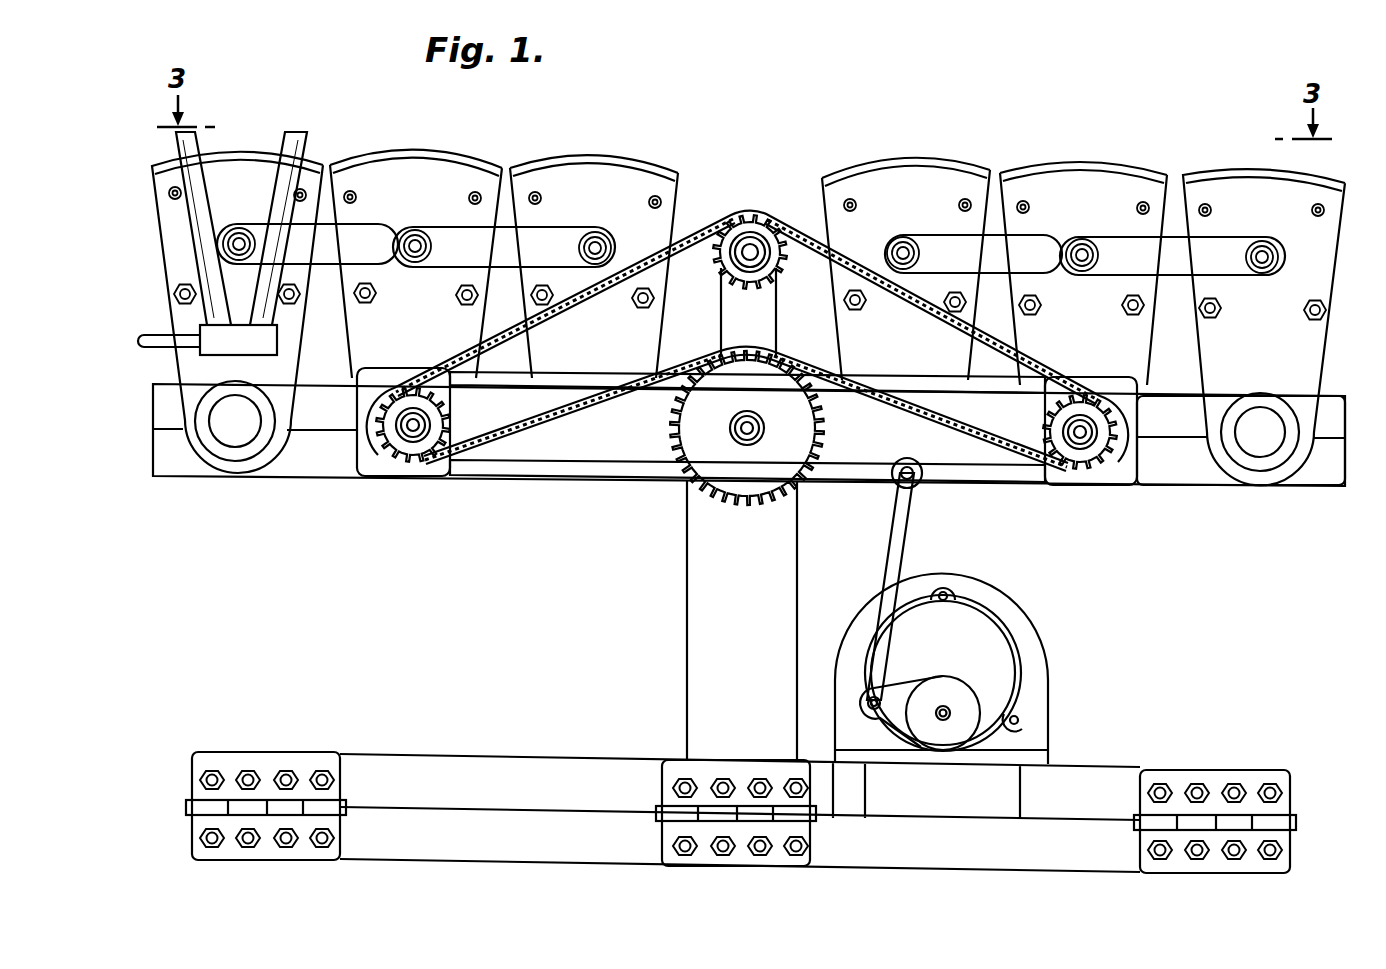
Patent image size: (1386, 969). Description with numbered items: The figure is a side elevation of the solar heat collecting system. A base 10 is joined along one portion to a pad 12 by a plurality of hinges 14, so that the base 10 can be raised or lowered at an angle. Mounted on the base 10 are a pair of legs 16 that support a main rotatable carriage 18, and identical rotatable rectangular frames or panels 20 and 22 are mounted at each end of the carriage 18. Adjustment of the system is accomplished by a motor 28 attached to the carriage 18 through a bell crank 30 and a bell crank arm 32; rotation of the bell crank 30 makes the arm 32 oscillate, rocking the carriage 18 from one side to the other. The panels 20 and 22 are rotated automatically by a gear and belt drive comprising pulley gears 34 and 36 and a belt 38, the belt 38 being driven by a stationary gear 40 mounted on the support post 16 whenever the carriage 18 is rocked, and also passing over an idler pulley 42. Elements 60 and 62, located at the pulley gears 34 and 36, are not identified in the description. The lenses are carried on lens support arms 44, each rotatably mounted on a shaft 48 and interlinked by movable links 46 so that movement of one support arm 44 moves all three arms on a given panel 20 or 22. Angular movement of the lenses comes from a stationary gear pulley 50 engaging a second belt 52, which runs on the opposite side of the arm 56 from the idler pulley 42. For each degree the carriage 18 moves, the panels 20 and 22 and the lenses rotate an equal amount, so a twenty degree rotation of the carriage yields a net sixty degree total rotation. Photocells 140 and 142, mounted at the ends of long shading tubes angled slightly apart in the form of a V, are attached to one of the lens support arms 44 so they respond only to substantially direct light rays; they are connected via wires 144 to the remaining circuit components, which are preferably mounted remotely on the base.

The base 10 is at (460, 770).
The pad 12 is at (412, 855).
The hinges 14 is at (741, 788).
The legs 16 is at (700, 562).
The main rotatable carriage 18 is at (1105, 478).
The rotatable rectangular frame or panel 20 is at (158, 438).
The rotatable rectangular frame or panel 22 is at (1320, 472).
The motor 28 is at (1020, 615).
The bell crank 30 is at (965, 685).
The bell crank arm 32 is at (900, 522).
The pulley gear 34 is at (395, 458).
The pulley gear 36 is at (1068, 460).
The belt 38 is at (735, 228).
The stationary gear 40 is at (710, 470).
The idler pulley 42 is at (760, 212).
The lens support arm 44 is at (725, 301).
The movable links 46 is at (751, 195).
The shaft 48 is at (736, 457).
The stationary gear pulley 50 is at (690, 486).
The second belt 52 is at (670, 345).
The arm 56 is at (765, 300).
The shaft 60 is at (414, 435).
The shaft 62 is at (1098, 437).
The photocell 140 is at (178, 140).
The photocell 142 is at (296, 128).
The wires 144 is at (166, 332).